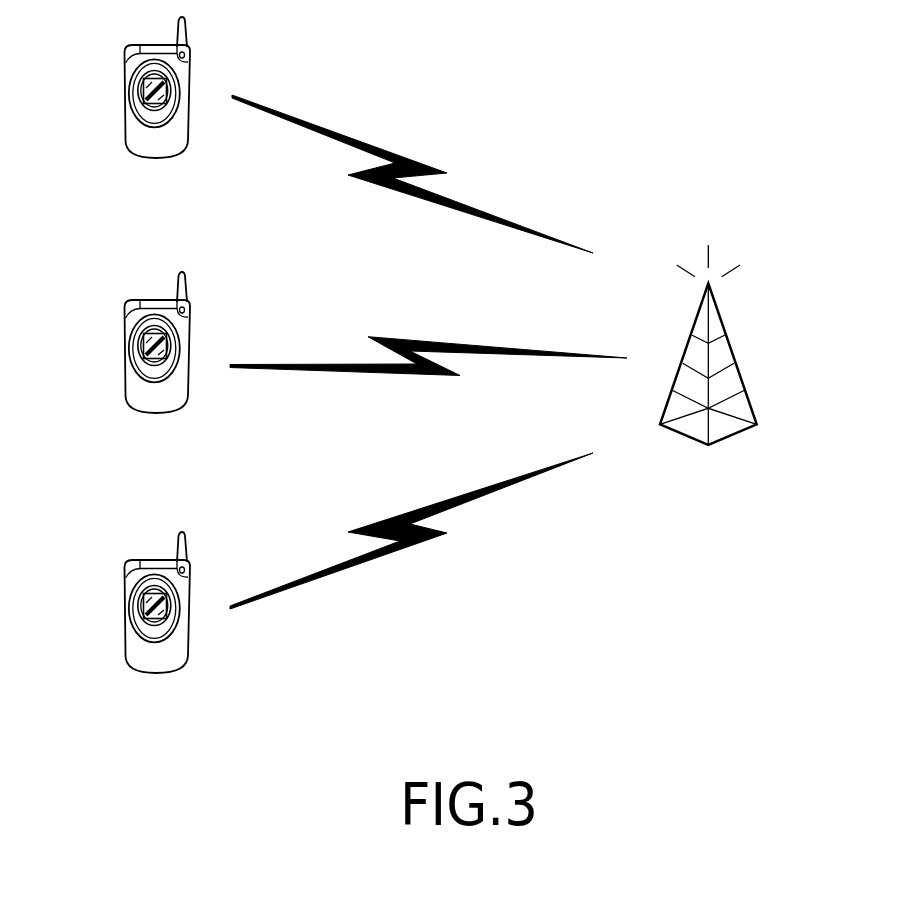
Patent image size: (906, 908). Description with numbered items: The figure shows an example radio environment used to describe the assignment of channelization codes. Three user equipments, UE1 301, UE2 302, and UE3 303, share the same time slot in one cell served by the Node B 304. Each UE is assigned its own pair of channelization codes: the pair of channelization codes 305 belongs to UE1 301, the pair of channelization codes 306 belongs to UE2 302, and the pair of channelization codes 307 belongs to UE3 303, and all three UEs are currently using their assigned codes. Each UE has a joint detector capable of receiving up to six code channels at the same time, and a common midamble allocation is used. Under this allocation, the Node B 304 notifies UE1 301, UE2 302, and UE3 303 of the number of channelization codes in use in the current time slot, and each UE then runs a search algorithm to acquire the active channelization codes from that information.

The UE 301 is at (124, 98).
The UE 302 is at (124, 348).
The UE 303 is at (124, 607).
The Node B 304 is at (738, 367).
The pair of channelization codes 305 is at (508, 224).
The pair of channelization codes 306 is at (503, 348).
The pair of channelization codes 307 is at (506, 481).